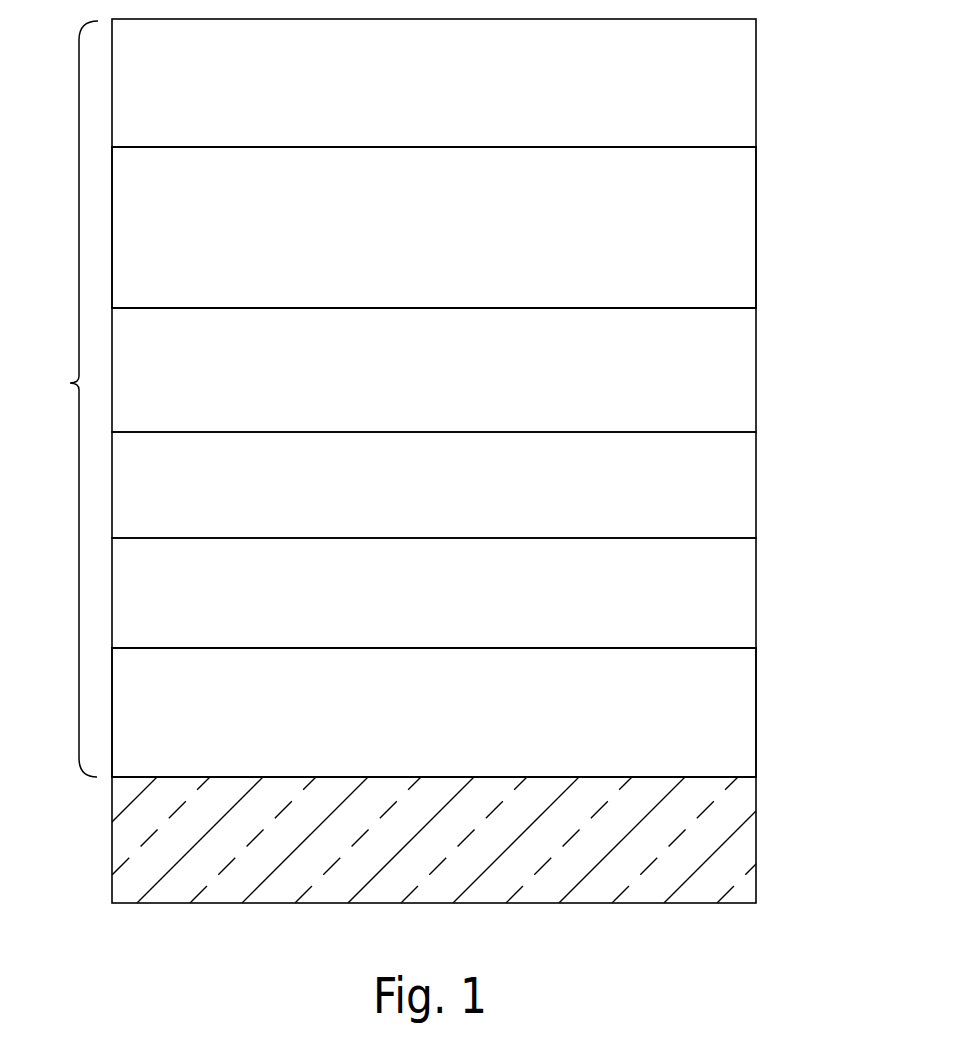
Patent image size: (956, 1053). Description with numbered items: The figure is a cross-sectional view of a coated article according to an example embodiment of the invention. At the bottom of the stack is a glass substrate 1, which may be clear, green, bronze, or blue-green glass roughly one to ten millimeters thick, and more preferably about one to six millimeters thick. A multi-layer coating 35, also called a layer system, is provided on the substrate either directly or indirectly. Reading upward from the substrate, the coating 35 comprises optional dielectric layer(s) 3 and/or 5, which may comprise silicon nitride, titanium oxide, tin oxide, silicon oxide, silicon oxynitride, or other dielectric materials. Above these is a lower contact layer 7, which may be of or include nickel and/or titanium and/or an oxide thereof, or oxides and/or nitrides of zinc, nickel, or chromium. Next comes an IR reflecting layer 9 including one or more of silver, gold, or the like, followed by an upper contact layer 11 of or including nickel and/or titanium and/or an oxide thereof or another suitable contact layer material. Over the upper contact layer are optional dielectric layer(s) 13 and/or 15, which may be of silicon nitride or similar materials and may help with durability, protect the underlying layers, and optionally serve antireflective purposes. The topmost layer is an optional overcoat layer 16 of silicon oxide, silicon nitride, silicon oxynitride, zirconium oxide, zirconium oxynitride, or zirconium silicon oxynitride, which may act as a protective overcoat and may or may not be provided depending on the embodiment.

The glass substrate 1 is at (746, 839).
The optional dielectric layer 3 is at (746, 710).
The optional dielectric layer 5 is at (800, 708).
The lower contact layer 7 is at (746, 592).
The IR reflecting layer 9 is at (746, 484).
The upper contact layer 11 is at (746, 382).
The optional dielectric layer 13 is at (746, 239).
The optional dielectric layer 15 is at (800, 237).
The optional overcoat layer 16 is at (746, 88).
The multi-layer coating 35 is at (67, 399).